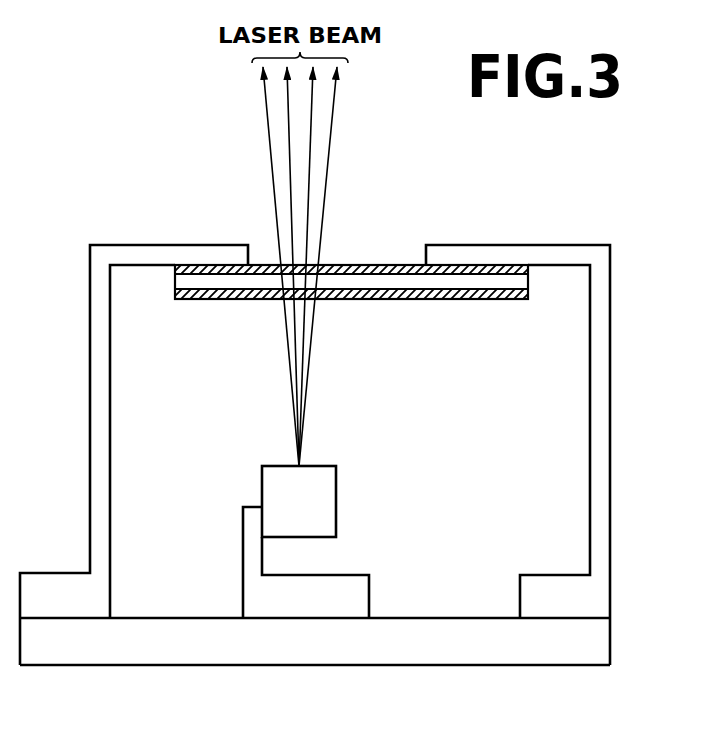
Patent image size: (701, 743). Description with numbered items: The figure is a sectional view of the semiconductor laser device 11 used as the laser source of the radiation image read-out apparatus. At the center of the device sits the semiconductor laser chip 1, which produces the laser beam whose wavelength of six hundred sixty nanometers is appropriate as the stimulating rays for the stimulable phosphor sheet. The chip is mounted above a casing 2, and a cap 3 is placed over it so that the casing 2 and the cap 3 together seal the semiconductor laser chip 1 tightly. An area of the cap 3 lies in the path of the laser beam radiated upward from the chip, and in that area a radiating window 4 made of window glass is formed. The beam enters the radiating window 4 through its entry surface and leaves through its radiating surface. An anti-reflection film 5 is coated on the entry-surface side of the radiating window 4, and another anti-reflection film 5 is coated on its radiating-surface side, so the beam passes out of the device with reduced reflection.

The semiconductor laser chip 1 is at (336, 475).
The casing 2 is at (533, 655).
The cap 3 is at (603, 525).
The radiating window 4 is at (367, 308).
The anti-reflection film 5 is at (482, 293).
The semiconductor laser device 11 is at (540, 160).